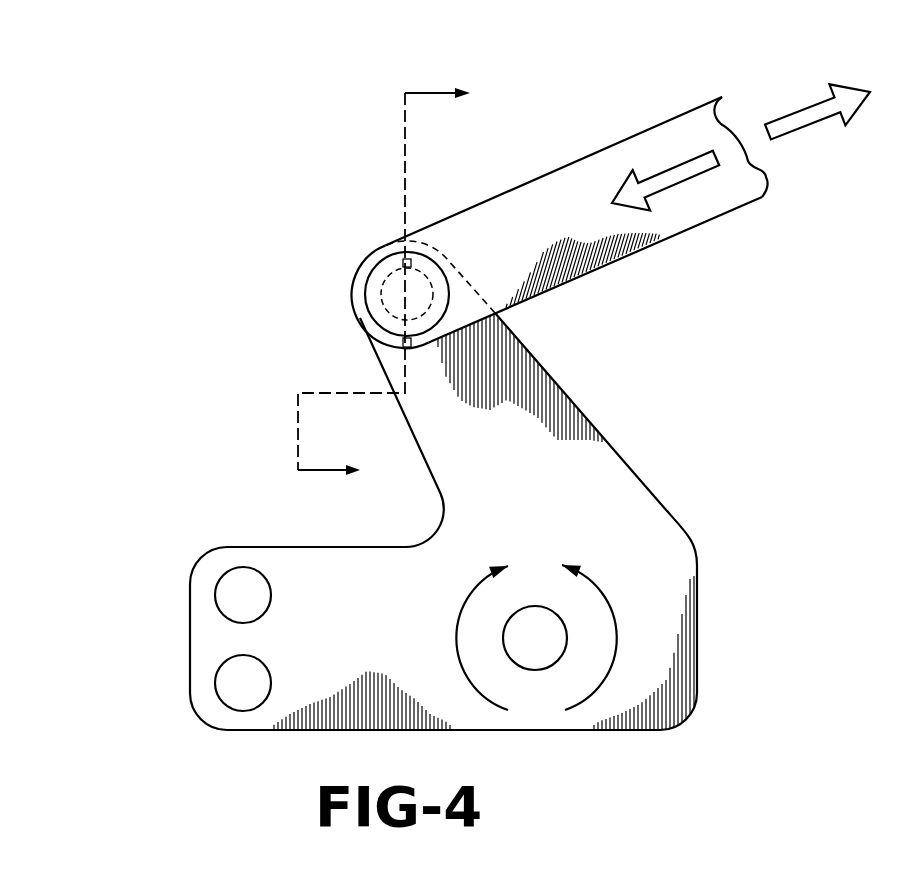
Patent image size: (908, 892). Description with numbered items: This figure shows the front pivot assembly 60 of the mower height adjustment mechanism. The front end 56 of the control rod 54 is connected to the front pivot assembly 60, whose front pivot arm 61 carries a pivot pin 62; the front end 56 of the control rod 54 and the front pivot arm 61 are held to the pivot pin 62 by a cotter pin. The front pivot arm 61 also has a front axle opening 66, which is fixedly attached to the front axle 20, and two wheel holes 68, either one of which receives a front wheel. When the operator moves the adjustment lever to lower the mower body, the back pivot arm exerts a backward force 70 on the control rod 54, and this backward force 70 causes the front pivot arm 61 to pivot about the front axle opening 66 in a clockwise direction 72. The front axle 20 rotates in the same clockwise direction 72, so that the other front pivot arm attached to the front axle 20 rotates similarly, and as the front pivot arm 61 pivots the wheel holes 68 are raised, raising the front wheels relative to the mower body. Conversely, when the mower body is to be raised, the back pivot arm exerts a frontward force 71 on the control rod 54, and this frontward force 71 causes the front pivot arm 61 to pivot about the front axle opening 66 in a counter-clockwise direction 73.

The front pivot assembly 60 is at (343, 190).
The control rod 54 is at (680, 130).
The front end of the control rod 56 is at (480, 228).
The pivot pin 62 is at (383, 322).
The front pivot arm 61 is at (577, 405).
The wheel holes 68 is at (237, 678).
The front axle opening 66 is at (542, 615).
The front axle 20 is at (520, 652).
The clockwise direction 72 is at (460, 620).
The counter-clockwise direction 73 is at (612, 617).
The backward force 70 is at (800, 118).
The frontward force 71 is at (668, 177).